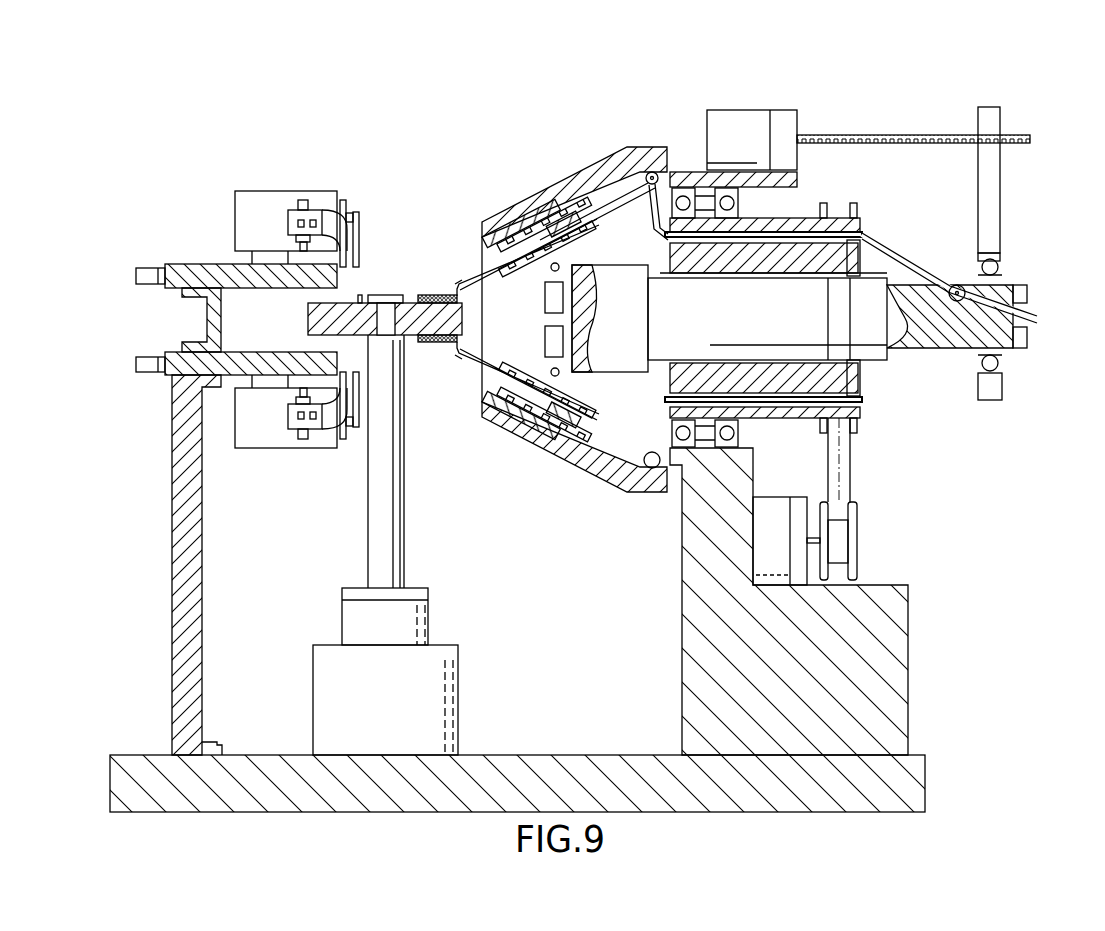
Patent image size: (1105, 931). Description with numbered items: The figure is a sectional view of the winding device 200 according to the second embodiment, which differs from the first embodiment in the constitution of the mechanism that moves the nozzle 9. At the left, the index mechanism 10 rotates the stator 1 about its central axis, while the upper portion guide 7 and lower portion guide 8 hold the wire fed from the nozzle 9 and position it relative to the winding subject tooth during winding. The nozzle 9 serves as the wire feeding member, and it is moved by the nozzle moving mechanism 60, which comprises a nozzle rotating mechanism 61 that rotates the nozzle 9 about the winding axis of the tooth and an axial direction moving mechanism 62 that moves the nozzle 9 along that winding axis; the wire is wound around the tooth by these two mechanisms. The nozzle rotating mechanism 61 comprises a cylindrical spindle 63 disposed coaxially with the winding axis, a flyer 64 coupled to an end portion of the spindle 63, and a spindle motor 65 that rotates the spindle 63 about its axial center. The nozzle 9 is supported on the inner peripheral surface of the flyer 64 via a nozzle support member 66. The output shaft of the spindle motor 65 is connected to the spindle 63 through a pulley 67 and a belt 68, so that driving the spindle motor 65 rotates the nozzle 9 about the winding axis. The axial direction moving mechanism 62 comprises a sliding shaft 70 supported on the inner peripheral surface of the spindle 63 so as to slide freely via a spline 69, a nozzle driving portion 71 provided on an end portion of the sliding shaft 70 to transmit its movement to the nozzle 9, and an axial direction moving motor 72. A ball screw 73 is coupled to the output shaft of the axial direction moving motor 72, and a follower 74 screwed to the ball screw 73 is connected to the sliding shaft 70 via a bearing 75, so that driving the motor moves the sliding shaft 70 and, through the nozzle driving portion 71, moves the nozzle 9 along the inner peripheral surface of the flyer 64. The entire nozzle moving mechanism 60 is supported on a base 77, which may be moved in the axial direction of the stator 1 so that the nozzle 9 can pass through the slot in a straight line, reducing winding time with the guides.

The stator 1 is at (405, 303).
The upper portion guide 7 is at (320, 193).
The lower portion guide 8 is at (316, 444).
The nozzle 9 is at (471, 272).
The index mechanism 10 is at (438, 594).
The nozzle moving mechanism 60 is at (665, 96).
The nozzle rotating mechanism 61 is at (906, 504).
The axial direction moving mechanism 62 is at (808, 110).
The spindle 63 is at (830, 230).
The flyer 64 is at (622, 150).
The spindle motor 65 is at (775, 505).
The nozzle support member 66 is at (500, 220).
The pulley 67 is at (857, 545).
The belt 68 is at (845, 458).
The spline 69 is at (815, 367).
The sliding shaft 70 is at (875, 352).
The nozzle driving portion 71 is at (578, 233).
The axial direction moving motor 72 is at (745, 122).
The ball screw 73 is at (868, 136).
The follower 74 is at (1000, 187).
The bearing 75 is at (1000, 263).
The base 77 is at (898, 632).
The winding device 200 is at (408, 166).